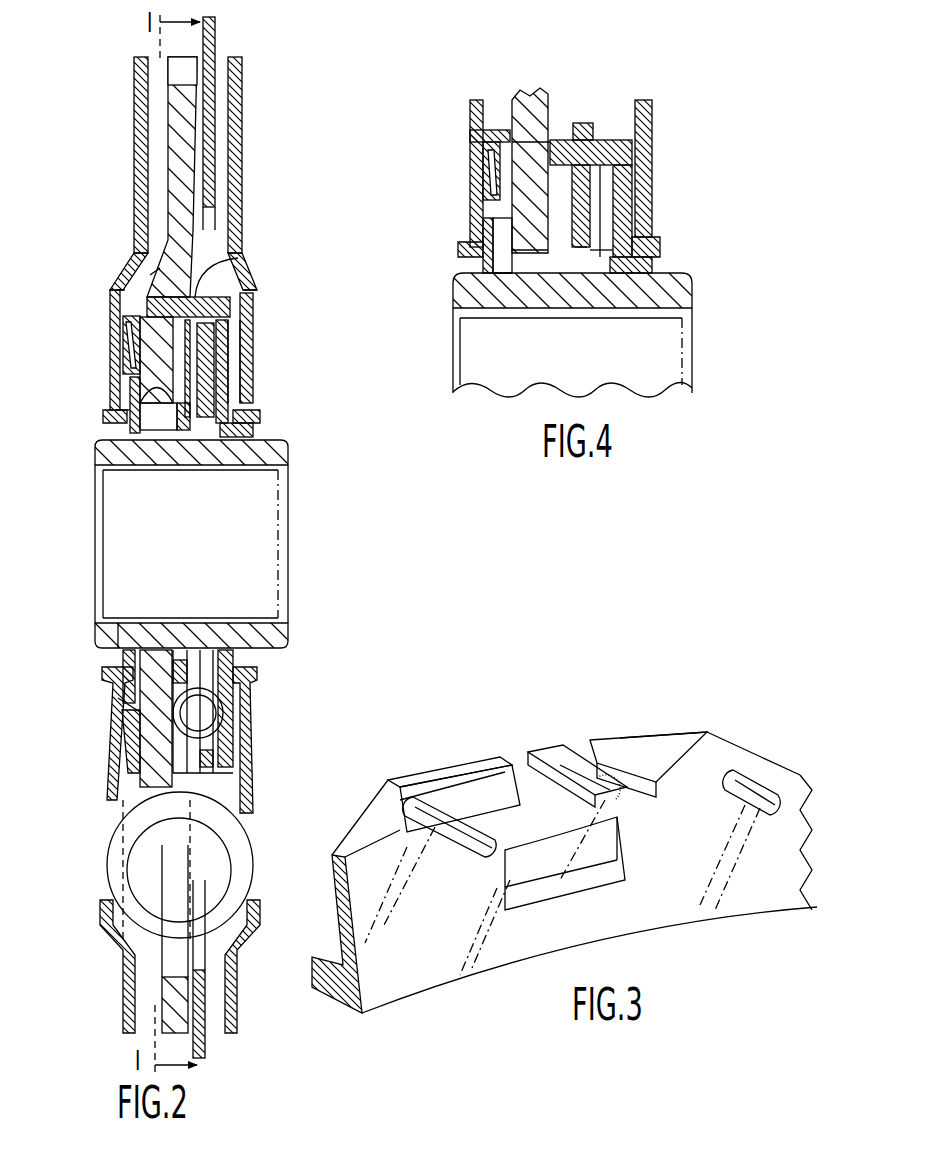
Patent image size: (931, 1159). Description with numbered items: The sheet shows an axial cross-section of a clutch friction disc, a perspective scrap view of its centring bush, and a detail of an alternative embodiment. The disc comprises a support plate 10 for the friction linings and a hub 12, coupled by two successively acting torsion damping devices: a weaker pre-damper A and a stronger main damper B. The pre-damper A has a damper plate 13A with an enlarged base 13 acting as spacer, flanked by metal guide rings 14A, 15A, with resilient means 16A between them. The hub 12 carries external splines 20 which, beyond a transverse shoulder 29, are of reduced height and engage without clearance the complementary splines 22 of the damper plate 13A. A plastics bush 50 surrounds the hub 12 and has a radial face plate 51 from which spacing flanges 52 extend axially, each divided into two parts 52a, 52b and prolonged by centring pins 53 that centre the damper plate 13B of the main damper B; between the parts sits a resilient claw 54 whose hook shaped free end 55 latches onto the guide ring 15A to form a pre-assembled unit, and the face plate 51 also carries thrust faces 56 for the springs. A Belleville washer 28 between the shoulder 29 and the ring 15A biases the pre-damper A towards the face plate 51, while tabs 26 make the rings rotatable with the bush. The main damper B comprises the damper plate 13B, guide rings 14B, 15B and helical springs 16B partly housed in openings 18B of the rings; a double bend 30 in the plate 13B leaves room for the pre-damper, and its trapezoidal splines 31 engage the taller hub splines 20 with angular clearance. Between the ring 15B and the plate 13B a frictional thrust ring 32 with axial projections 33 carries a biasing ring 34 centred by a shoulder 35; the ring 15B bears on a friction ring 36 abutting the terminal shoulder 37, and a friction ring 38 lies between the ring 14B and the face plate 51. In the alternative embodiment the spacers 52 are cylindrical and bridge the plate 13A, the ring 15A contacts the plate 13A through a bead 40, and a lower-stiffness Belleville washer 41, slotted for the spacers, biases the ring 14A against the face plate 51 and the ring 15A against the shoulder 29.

In FIG. 2, the support plate 10 is at (215, 38).
In FIG. 2, the hub 12 is at (100, 645).
In FIG. 4, the hub 12 is at (694, 297).
In FIG. 2, the enlarged base 13 is at (183, 440).
In FIG. 2, the damper plate 13A is at (214, 386).
In FIG. 4, the damper plate 13A is at (588, 160).
In FIG. 2, the damper plate 13B is at (176, 197).
In FIG. 4, the damper plate 13B is at (533, 106).
In FIG. 2, the guide ring 14A is at (228, 350).
In FIG. 4, the guide ring 14A is at (632, 192).
In FIG. 2, the guide ring 14B is at (240, 92).
In FIG. 4, the guide ring 14B is at (652, 118).
In FIG. 2, the guide ring 15A is at (240, 265).
In FIG. 4, the guide ring 15A is at (490, 222).
In FIG. 2, the guide ring 15B is at (138, 84).
In FIG. 4, the guide ring 15B is at (470, 108).
In FIG. 2, the resilient means 16A is at (224, 714).
In FIG. 2, the resilient means 16B is at (247, 840).
In FIG. 2, the openings 18B is at (128, 795).
In FIG. 2, the splines 20 is at (155, 433).
In FIG. 4, the splines 20 is at (460, 277).
In FIG. 2, the complementary splines 22 is at (197, 430).
In FIG. 4, the complementary splines 22 is at (600, 290).
In FIG. 2, the tabs 26 is at (118, 290).
In FIG. 2, the resilient annular means 28 is at (123, 699).
In FIG. 2, the transverse shoulder 29 is at (148, 388).
In FIG. 4, the transverse shoulder 29 is at (522, 305).
In FIG. 2, the double bend 30 is at (150, 275).
In FIG. 2, the splines 31 is at (137, 445).
In FIG. 4, the splines 31 is at (505, 305).
In FIG. 2, the frictional thrust ring 32 is at (126, 758).
In FIG. 2, the axial projections 33 is at (123, 324).
In FIG. 4, the axial projections 33 is at (470, 136).
In FIG. 2, the biasing ring 34 is at (128, 347).
In FIG. 4, the biasing ring 34 is at (485, 165).
In FIG. 2, the shoulder 35 is at (128, 716).
In FIG. 4, the shoulder 35 is at (492, 192).
In FIG. 2, the friction ring 36 is at (118, 432).
In FIG. 4, the friction ring 36 is at (470, 252).
In FIG. 2, the transverse terminal shoulder 37 is at (118, 640).
In FIG. 2, the friction ring 38 is at (235, 745).
In FIG. 4, the bead 40 is at (583, 290).
In FIG. 4, the resilient means 41 is at (600, 132).
In FIG. 2, the bush 50 is at (258, 425).
In FIG. 4, the bush 50 is at (655, 262).
In FIG. 3, the bush 50 is at (334, 962).
In FIG. 2, the face plate 51 is at (242, 325).
In FIG. 4, the face plate 51 is at (616, 232).
In FIG. 3, the face plate 51 is at (405, 960).
In FIG. 4, the spacing flanges 52 is at (578, 135).
In FIG. 3, the spacing flanges 52 is at (500, 752).
In FIG. 3, the flange part 52a is at (457, 770).
In FIG. 3, the flange part 52b is at (650, 745).
In FIG. 2, the centring pins 53 is at (148, 305).
In FIG. 4, the centring pins 53 is at (525, 140).
In FIG. 3, the centring pins 53 is at (475, 835).
In FIG. 3, the resilient claw 54 is at (560, 748).
In FIG. 3, the hook shaped free end 55 is at (630, 790).
In FIG. 3, the thrust faces 56 is at (600, 880).
In FIG. 2, the pre-damper A is at (268, 676).
In FIG. 2, the main damper B is at (100, 905).